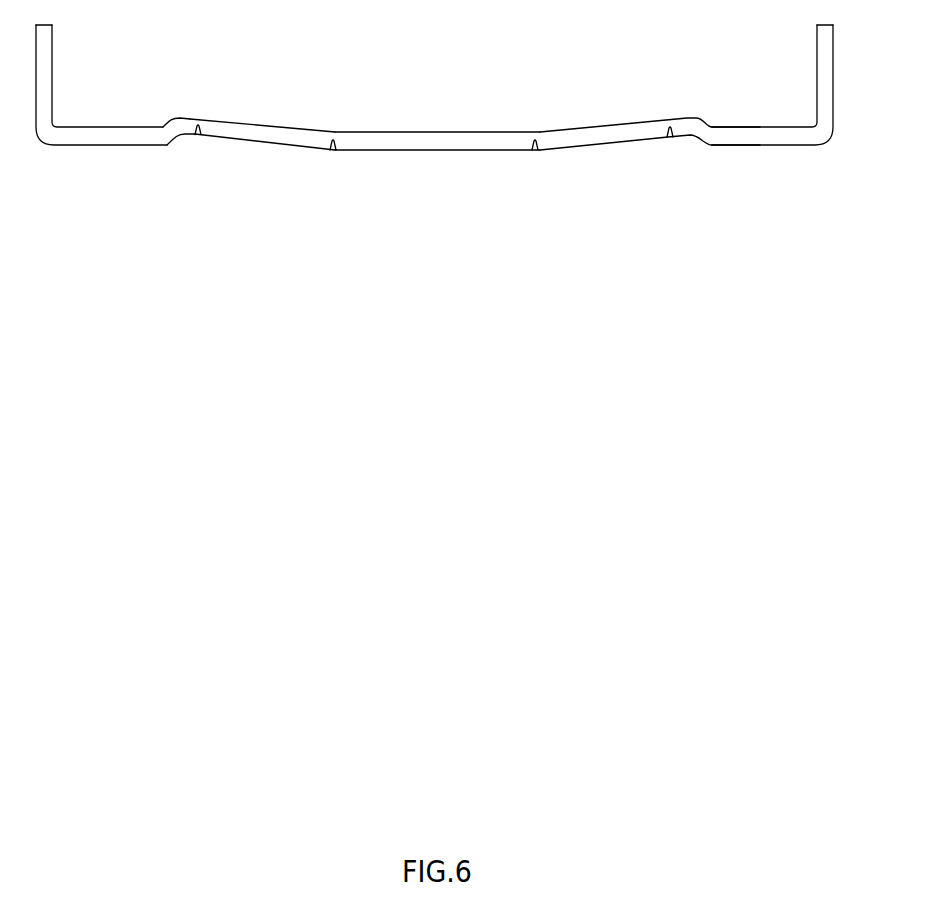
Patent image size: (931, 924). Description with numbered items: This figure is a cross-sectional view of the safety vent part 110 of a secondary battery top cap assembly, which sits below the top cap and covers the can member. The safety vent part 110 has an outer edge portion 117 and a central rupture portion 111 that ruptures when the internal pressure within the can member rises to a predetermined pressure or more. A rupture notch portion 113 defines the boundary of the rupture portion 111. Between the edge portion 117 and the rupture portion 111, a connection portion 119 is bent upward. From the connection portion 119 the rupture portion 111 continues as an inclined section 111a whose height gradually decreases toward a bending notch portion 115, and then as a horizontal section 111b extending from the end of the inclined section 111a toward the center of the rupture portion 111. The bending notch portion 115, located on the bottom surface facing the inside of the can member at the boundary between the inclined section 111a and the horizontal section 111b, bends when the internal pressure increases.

The safety vent part 110 is at (488, 108).
The rupture portion 111 is at (438, 76).
The inclined section 111a is at (292, 126).
The horizontal section 111b is at (442, 131).
The rupture notch portion 113 is at (670, 139).
The bending notch portion 115 is at (333, 152).
The edge portion 117 is at (758, 146).
The connection portion 119 is at (165, 123).